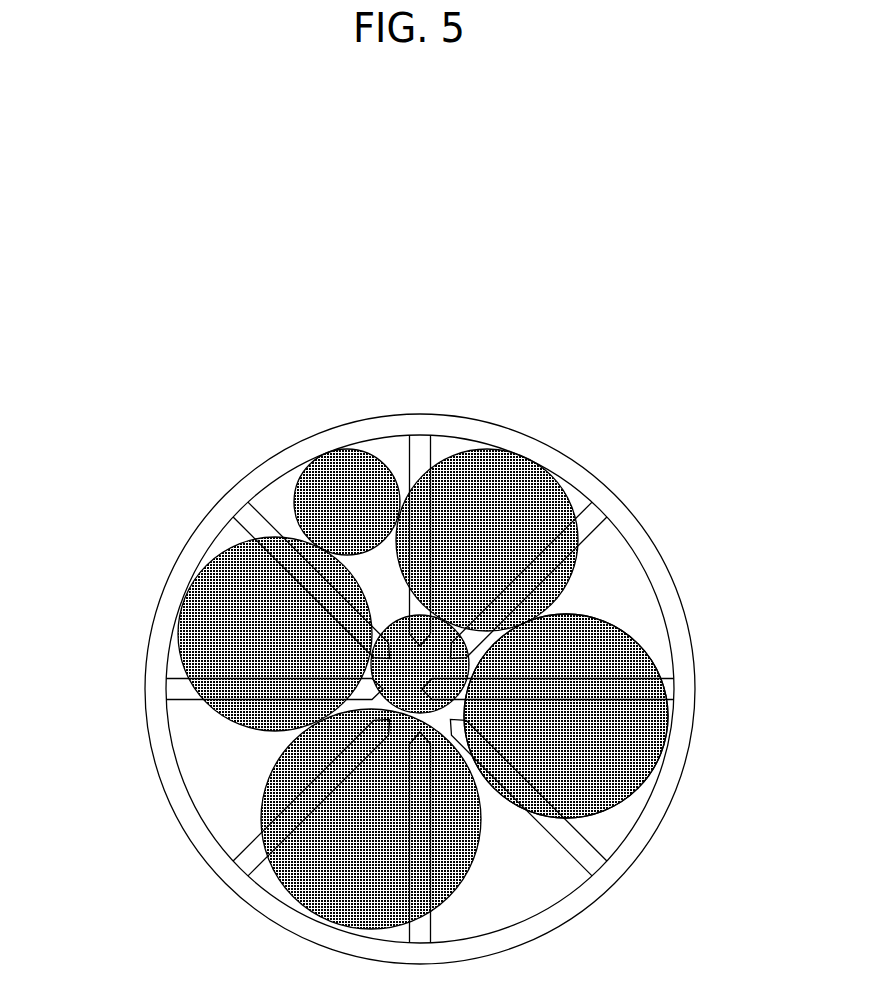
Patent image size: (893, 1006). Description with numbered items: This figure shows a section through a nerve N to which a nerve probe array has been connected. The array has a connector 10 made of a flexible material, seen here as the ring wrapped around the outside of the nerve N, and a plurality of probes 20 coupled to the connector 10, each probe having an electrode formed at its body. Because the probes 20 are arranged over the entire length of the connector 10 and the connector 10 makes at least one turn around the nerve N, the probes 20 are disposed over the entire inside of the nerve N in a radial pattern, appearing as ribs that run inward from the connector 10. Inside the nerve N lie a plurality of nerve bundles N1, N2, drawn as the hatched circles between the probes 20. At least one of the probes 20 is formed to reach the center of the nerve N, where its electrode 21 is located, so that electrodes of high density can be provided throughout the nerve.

The connector 10 is at (387, 430).
The probes 20 is at (600, 533).
The nerve N is at (602, 640).
The nerve bundle N1 is at (217, 617).
The nerve bundle N2 is at (270, 768).
The electrode 21 is at (605, 690).